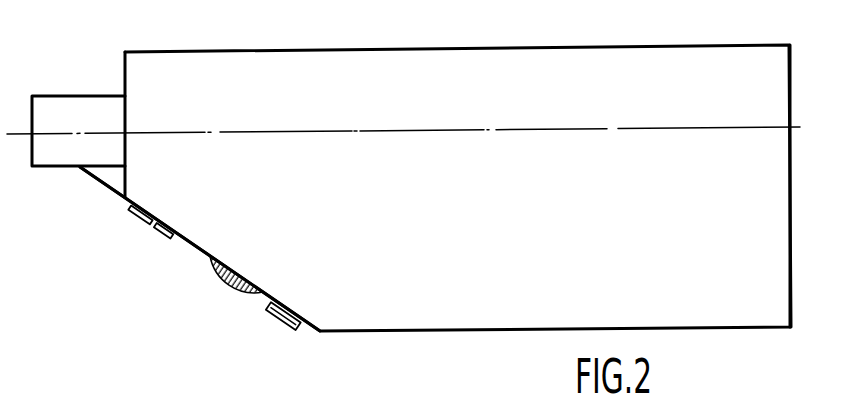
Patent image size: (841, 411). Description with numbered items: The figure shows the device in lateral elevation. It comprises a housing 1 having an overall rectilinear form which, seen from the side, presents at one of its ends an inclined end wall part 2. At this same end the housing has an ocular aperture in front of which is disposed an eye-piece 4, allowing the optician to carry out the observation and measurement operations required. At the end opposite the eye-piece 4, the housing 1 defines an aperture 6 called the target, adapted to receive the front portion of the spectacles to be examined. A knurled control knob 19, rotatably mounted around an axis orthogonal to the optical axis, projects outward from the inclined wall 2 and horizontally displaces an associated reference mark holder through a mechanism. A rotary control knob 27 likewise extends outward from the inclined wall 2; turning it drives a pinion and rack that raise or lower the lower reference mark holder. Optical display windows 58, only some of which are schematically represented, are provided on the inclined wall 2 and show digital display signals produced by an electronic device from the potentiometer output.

The housing 1 is at (598, 46).
The inclined end wall part 2 is at (200, 249).
The eye-piece 4 is at (83, 133).
The target aperture 6 is at (762, 212).
The control knob 19 is at (284, 324).
The rotary control knob 27 is at (227, 290).
The optical display windows 58 is at (162, 233).